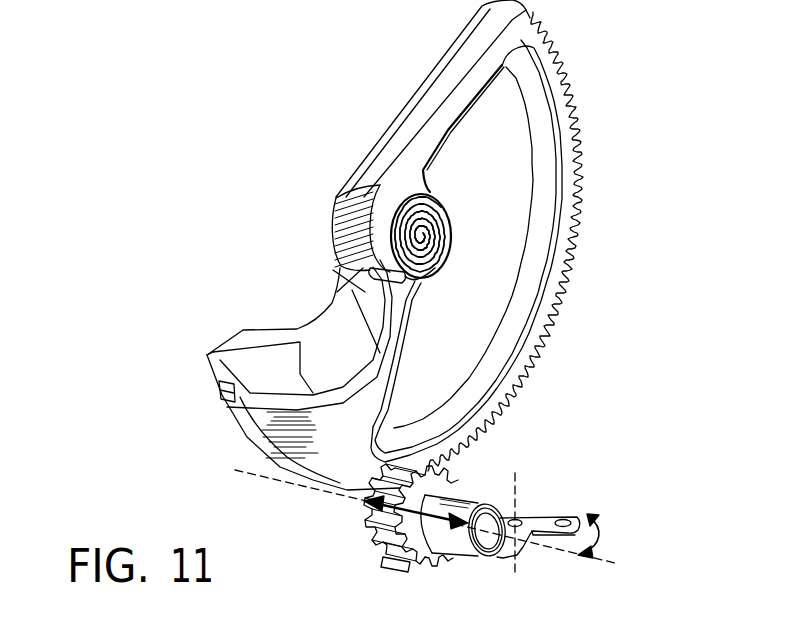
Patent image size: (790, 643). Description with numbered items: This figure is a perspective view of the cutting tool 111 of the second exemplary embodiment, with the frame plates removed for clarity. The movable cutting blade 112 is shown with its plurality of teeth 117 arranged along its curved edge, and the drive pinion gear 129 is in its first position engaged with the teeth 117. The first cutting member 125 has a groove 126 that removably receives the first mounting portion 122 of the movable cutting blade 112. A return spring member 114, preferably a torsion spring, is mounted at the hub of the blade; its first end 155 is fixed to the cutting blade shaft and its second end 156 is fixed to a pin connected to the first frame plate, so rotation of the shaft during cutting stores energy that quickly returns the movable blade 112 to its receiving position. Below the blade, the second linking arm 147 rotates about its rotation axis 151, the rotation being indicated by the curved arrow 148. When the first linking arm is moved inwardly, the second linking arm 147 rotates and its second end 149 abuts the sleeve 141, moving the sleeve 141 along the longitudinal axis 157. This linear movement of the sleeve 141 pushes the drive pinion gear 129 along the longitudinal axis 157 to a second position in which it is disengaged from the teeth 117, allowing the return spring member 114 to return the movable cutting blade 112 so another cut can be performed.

The cutting tool 111 is at (232, 147).
The movable cutting blade 112 is at (400, 110).
The return spring member 114 is at (455, 212).
The teeth 117 is at (580, 178).
The first mounting portion 122 is at (218, 386).
The first cutting member 125 is at (222, 340).
The groove 126 is at (220, 376).
The drive pinion gear 129 is at (375, 565).
The sleeve 141 is at (484, 495).
The second linking arm 147 is at (548, 517).
The rotation arrow 148 is at (563, 518).
The second end 149 is at (490, 553).
The rotation axis 151 is at (517, 480).
The first end 155 is at (435, 265).
The second end 156 is at (378, 262).
The longitudinal axis 157 is at (282, 478).